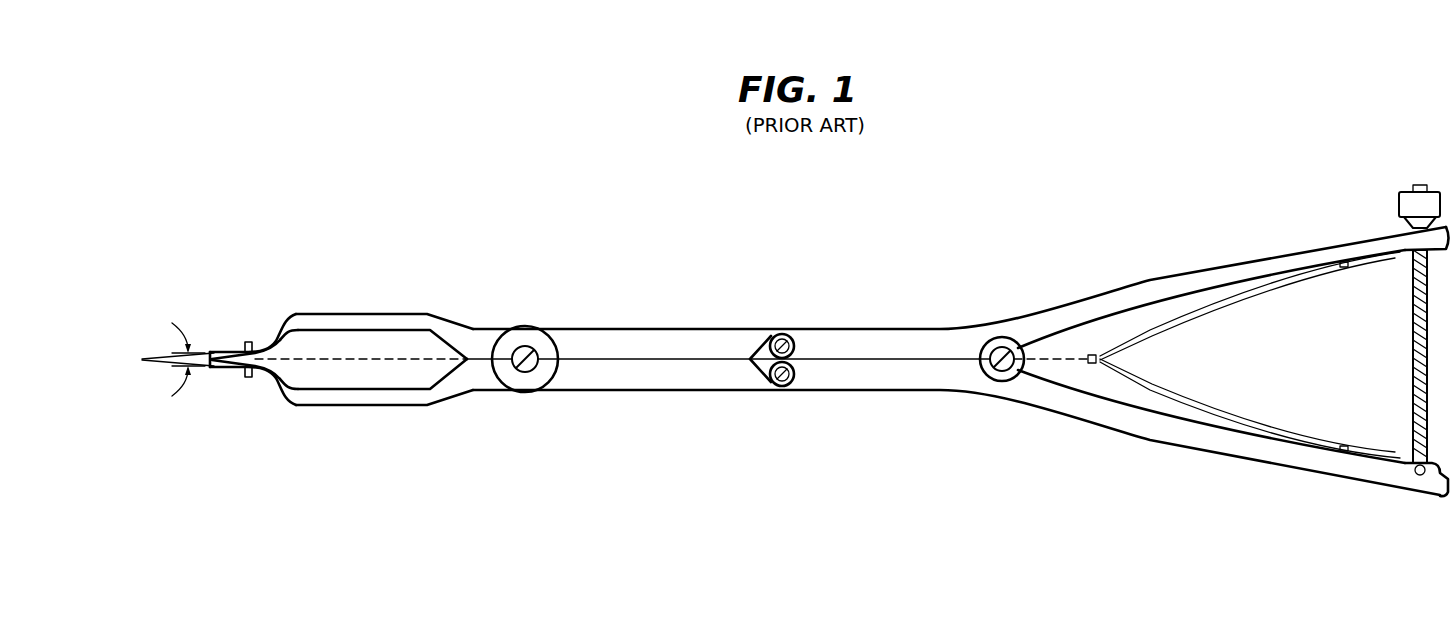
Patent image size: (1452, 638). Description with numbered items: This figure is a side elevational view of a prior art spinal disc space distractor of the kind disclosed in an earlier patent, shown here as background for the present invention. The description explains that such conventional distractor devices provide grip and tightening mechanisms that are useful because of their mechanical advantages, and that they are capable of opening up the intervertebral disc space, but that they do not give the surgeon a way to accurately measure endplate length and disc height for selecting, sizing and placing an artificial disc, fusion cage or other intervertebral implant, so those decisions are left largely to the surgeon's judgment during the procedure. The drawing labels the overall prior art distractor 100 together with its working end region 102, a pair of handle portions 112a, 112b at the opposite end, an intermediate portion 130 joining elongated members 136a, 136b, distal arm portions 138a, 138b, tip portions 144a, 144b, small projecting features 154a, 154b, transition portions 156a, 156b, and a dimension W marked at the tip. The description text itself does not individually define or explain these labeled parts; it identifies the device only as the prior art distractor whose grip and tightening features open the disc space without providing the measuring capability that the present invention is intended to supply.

The surgical instrument 100 is at (986, 258).
The jaw assembly 102 is at (312, 503).
The first handle 112a is at (1200, 278).
The second handle 112b is at (1200, 443).
The shaft clamp 130 is at (933, 279).
The first shaft member 136a is at (655, 330).
The second shaft member 136b is at (655, 389).
The first jaw arm 138a is at (406, 400).
The second jaw arm 138b is at (406, 318).
The first jaw tip 144a is at (224, 371).
The second jaw tip 144b is at (224, 349).
The first tab 154a is at (248, 378).
The second tab 154b is at (248, 340).
The first bend 156a is at (286, 400).
The second bend 156b is at (286, 318).
The wire width W is at (186, 355).